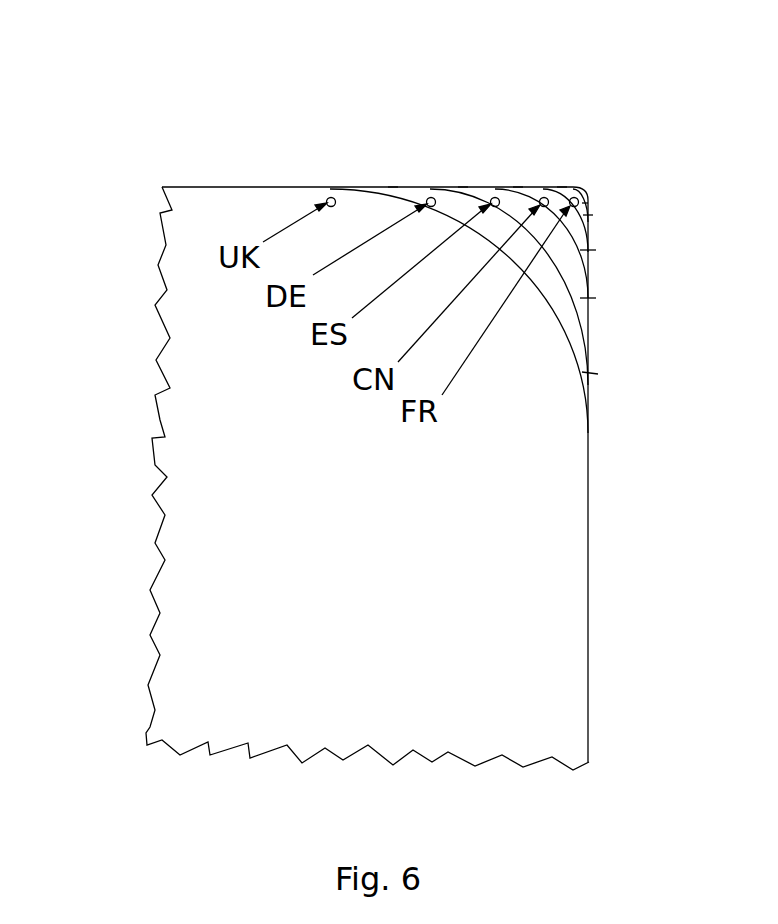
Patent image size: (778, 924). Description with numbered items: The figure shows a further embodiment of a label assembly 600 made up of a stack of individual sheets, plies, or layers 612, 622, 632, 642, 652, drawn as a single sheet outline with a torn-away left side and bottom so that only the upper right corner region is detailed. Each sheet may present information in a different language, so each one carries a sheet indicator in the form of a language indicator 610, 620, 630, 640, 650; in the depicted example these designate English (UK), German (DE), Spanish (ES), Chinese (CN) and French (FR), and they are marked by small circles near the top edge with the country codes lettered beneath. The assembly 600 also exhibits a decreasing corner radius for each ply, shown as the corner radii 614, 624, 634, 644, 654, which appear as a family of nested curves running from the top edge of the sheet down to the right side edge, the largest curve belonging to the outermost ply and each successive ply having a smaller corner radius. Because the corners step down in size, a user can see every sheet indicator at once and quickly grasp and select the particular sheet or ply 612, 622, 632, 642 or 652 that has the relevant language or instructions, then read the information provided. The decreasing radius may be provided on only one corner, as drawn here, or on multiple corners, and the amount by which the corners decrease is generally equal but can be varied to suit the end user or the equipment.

The label assembly 600 is at (210, 530).
The language indicator 610 is at (326, 201).
The sheet 612 is at (555, 493).
The corner radius 614 is at (393, 187).
The language indicator 620 is at (430, 197).
The sheet 622 is at (582, 372).
The corner radius 624 is at (463, 187).
The language indicator 630 is at (496, 197).
The sheet 632 is at (580, 298).
The corner radius 634 is at (518, 187).
The language indicator 640 is at (544, 197).
The sheet 642 is at (580, 250).
The corner radius 644 is at (562, 187).
The language indicator 650 is at (575, 197).
The sheet 652 is at (583, 215).
The corner radius 654 is at (587, 203).